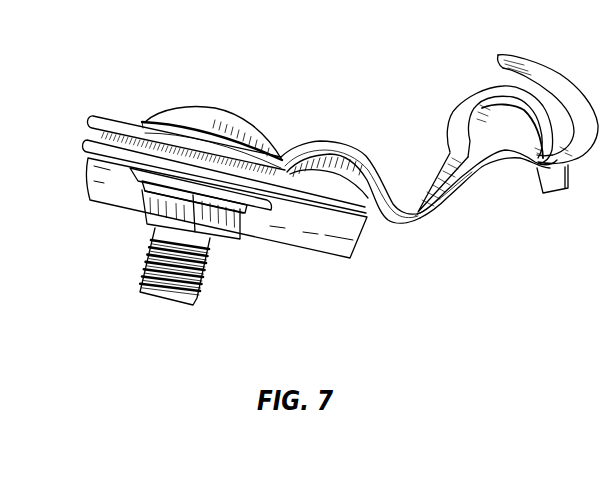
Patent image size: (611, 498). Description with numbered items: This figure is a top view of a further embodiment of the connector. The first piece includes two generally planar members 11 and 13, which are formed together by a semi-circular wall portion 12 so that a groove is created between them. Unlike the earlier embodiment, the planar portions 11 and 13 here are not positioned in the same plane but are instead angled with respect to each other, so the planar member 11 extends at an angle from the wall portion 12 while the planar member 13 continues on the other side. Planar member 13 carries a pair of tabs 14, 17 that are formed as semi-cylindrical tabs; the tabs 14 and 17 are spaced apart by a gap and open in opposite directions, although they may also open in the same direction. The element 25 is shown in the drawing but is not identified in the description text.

The planar member 11 is at (105, 120).
The semi-circular wall portion 12 is at (320, 147).
The planar member 13 is at (452, 193).
The tab 14 is at (557, 67).
The tab 17 is at (470, 93).
The base body 25 is at (110, 190).